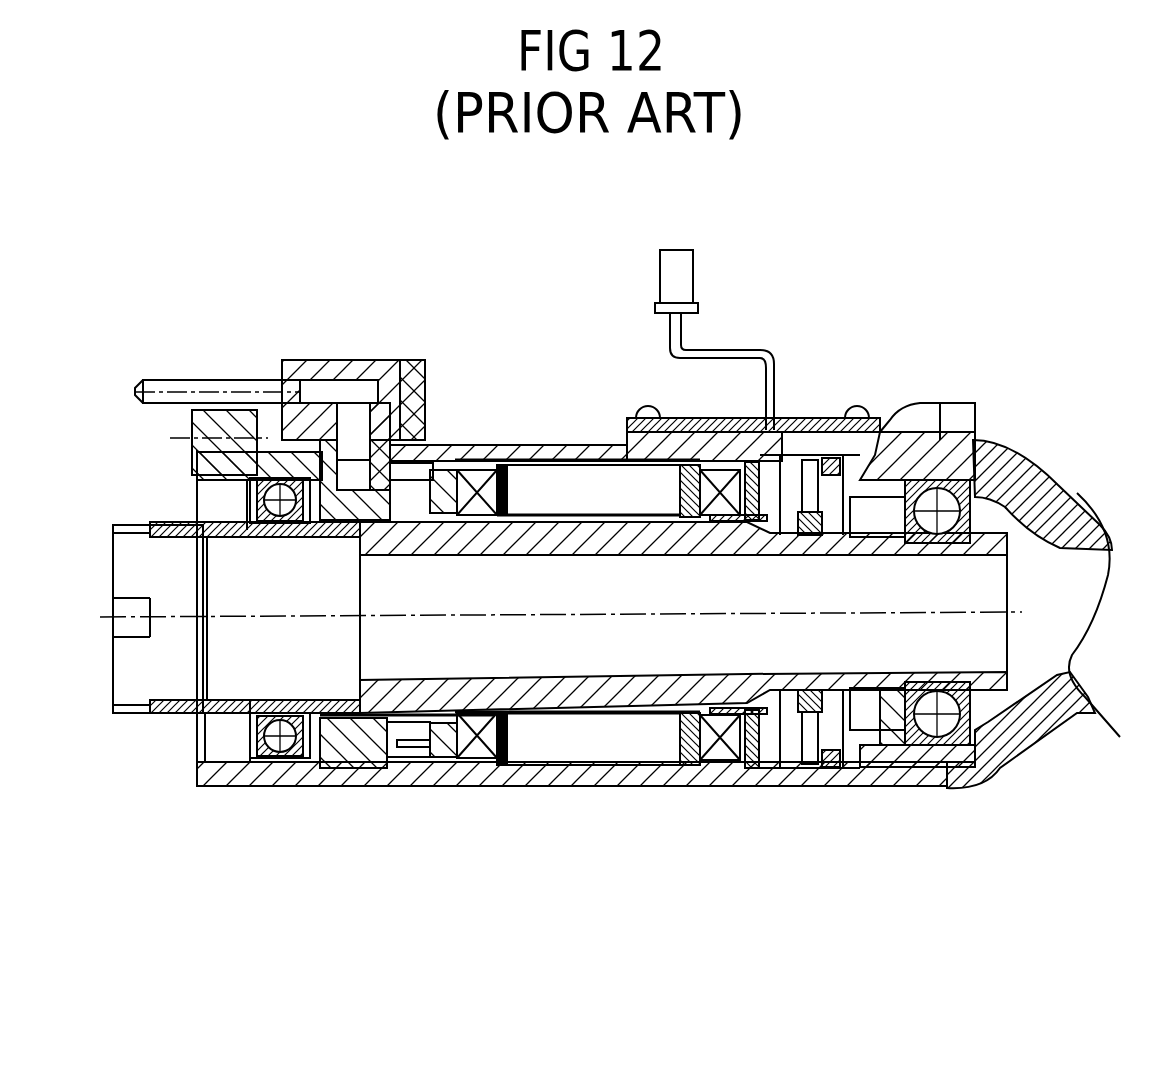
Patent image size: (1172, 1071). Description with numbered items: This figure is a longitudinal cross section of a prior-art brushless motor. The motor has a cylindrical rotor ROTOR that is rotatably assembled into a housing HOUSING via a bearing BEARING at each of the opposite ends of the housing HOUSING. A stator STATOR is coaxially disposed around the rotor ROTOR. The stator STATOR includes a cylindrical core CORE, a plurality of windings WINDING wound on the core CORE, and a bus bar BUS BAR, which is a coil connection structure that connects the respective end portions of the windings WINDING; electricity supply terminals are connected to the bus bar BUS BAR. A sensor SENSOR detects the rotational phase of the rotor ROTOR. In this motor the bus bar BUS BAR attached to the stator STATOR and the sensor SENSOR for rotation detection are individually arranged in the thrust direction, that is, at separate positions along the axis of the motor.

The bearing BEARING is at (262, 470).
The bus bar BUS BAR is at (369, 383).
The winding WINDING is at (462, 462).
The core CORE is at (579, 498).
The sensor SENSOR is at (800, 475).
The housing HOUSING is at (282, 772).
The stator STATOR is at (436, 816).
The rotor ROTOR is at (624, 737).